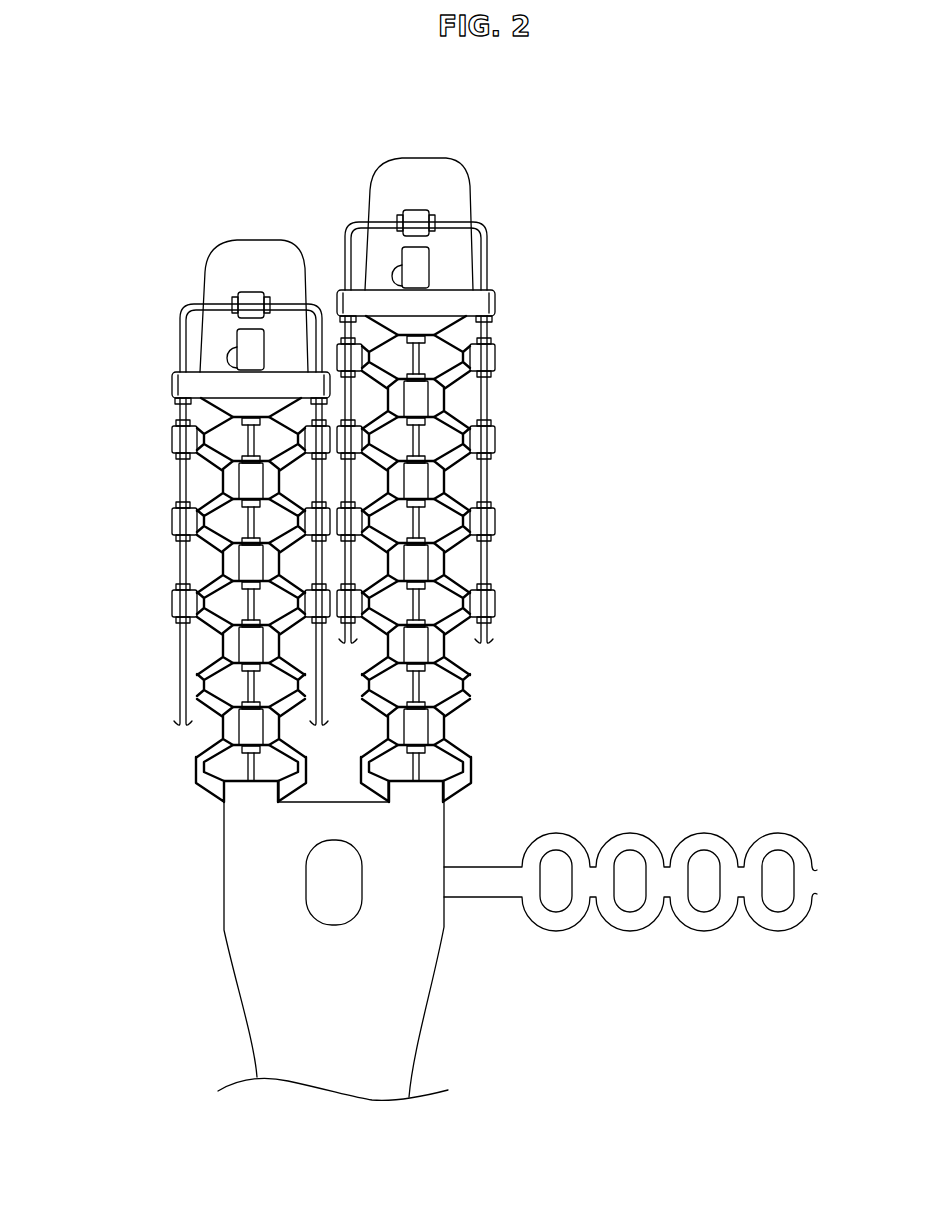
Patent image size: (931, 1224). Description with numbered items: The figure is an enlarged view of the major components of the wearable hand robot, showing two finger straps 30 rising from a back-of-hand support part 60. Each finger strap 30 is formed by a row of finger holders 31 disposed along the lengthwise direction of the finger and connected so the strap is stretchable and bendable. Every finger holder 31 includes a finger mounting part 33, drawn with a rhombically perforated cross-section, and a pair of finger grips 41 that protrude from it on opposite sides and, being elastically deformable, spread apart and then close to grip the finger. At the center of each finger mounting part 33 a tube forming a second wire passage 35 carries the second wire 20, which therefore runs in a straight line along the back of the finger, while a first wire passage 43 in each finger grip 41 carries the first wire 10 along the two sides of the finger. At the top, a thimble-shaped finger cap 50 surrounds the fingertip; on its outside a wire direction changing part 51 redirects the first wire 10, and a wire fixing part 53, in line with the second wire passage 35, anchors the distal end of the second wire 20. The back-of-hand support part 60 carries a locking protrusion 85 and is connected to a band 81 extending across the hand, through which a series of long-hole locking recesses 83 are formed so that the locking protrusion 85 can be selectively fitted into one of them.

The first wire 10 is at (347, 228).
The second wire 20 is at (250, 429).
The finger strap 30 is at (335, 559).
The finger holder 31 is at (335, 559).
The finger mounting part 33 is at (208, 541).
The second wire passage 35 is at (242, 727).
The finger grip 41 is at (178, 517).
The first wire passage 43 is at (179, 628).
The finger cap 50 is at (212, 231).
The wire direction changing part 51 is at (248, 294).
The wire fixing part 53 is at (232, 349).
The back-of-hand support part 60 is at (214, 894).
The band 81 is at (613, 932).
The locking recess 83 is at (703, 858).
The locking protrusion 85 is at (310, 888).